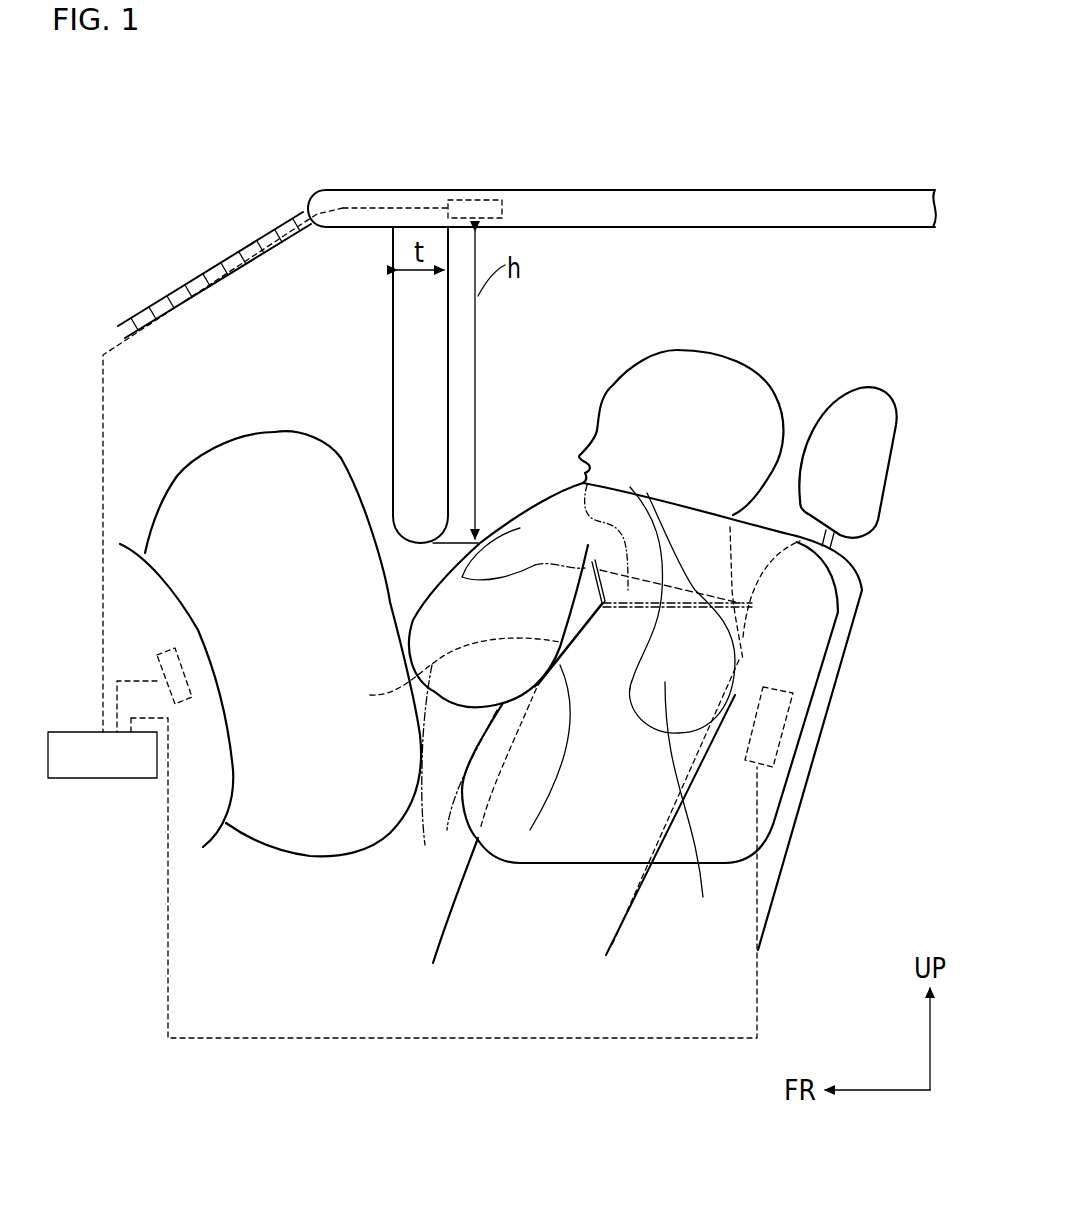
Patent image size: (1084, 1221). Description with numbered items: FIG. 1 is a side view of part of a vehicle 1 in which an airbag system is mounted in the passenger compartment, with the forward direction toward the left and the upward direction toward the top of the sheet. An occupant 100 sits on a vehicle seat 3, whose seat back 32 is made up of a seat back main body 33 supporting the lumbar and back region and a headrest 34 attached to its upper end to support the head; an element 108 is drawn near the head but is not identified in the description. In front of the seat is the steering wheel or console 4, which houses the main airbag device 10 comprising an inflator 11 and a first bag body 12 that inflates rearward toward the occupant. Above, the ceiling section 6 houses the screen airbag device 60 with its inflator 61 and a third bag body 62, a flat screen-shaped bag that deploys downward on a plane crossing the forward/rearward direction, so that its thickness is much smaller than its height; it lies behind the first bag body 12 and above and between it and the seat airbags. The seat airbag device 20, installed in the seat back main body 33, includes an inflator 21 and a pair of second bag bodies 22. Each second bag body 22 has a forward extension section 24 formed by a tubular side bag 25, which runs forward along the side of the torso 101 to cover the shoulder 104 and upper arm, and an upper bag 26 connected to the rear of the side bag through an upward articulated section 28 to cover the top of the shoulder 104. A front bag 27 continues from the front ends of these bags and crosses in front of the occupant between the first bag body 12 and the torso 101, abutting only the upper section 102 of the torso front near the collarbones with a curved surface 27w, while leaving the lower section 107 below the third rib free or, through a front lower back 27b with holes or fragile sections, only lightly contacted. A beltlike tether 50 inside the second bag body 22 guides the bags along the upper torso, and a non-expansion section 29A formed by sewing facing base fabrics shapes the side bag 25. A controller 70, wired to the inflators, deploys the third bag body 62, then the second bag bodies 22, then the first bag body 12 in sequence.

The vehicle 1 is at (840, 188).
The vehicle seat 3 is at (766, 668).
The console 4 is at (178, 581).
The ceiling section 6 is at (613, 203).
The main airbag device 10 is at (300, 430).
The inflator 11 is at (184, 674).
The first bag body 12 is at (345, 862).
The seat airbag device 20 is at (454, 584).
The inflator 21 is at (783, 720).
The second bag body 22 is at (840, 684).
The forward extension section 24 is at (635, 659).
The side bag 25 is at (600, 830).
The upper bag 26 is at (705, 527).
The front bag 27 is at (432, 602).
The front lower back 27b is at (420, 855).
The curved surface 27w is at (522, 862).
The articulated section 28 is at (818, 710).
The non-expansion section 29A is at (695, 809).
The seat back 32 is at (775, 890).
The seat back main body 33 is at (793, 823).
The headrest 34 is at (892, 460).
The beltlike tether 50 is at (470, 565).
The screen airbag device 60 is at (454, 347).
The inflator 61 is at (478, 198).
The third bag body 62 is at (450, 428).
The controller 70 is at (100, 778).
The occupant 100 is at (632, 360).
The torso 101 is at (443, 925).
The upper section of the front surface of the torso 102 is at (444, 674).
The shoulder 104 is at (740, 610).
The lower section of the front surface of the torso 107 is at (490, 805).
The occupant head top 108 is at (703, 350).